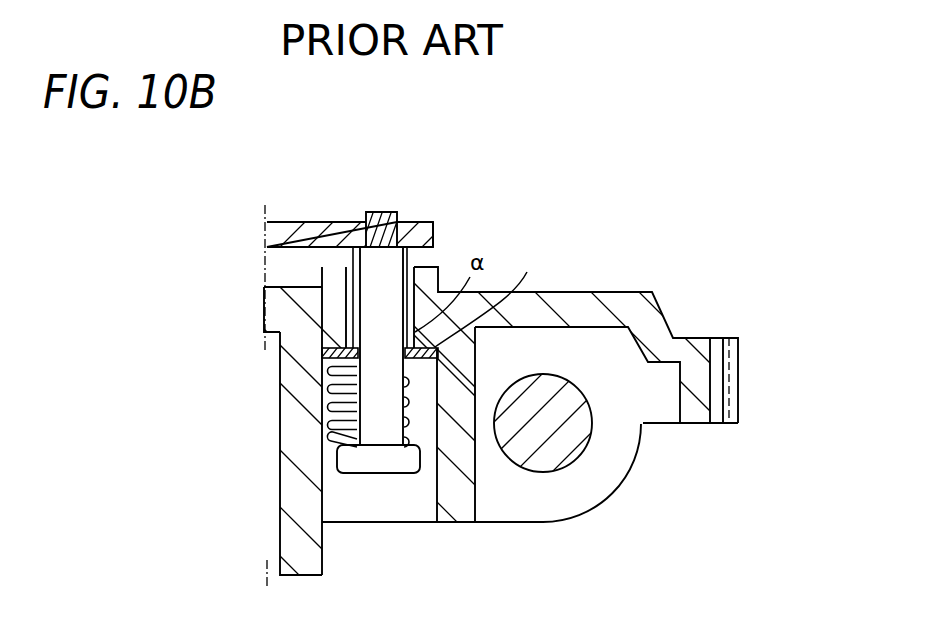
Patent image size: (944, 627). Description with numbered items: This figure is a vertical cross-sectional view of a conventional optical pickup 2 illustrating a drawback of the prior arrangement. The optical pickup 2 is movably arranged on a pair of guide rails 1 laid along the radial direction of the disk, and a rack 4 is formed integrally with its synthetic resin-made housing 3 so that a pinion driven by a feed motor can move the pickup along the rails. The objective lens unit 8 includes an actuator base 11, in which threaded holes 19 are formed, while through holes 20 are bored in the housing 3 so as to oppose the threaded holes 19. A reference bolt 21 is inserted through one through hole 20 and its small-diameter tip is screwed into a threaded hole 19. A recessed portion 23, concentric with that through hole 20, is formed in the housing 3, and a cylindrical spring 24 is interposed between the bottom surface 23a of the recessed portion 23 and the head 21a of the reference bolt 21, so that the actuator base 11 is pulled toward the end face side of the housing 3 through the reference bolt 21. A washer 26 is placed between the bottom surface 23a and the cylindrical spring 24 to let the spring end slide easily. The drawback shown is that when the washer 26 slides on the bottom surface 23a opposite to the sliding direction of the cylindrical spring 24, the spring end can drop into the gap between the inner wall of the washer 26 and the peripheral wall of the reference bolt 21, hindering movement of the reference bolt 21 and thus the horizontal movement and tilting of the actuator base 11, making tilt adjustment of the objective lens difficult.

The guide rails 1 is at (558, 445).
The optical pickup 2 is at (607, 249).
The housing 3 is at (290, 541).
The rack 4 is at (718, 347).
The objective lens unit 8 is at (253, 223).
The actuator base 11 is at (434, 224).
The threaded holes 19 is at (363, 221).
The through holes 20 is at (411, 268).
The reference bolt 21 is at (388, 213).
The head of the reference bolt 21a is at (375, 462).
The recessed portion 23 is at (423, 508).
The bottom surface 23a is at (322, 361).
The cylindrical spring 24 is at (340, 428).
The washer 26 is at (488, 298).